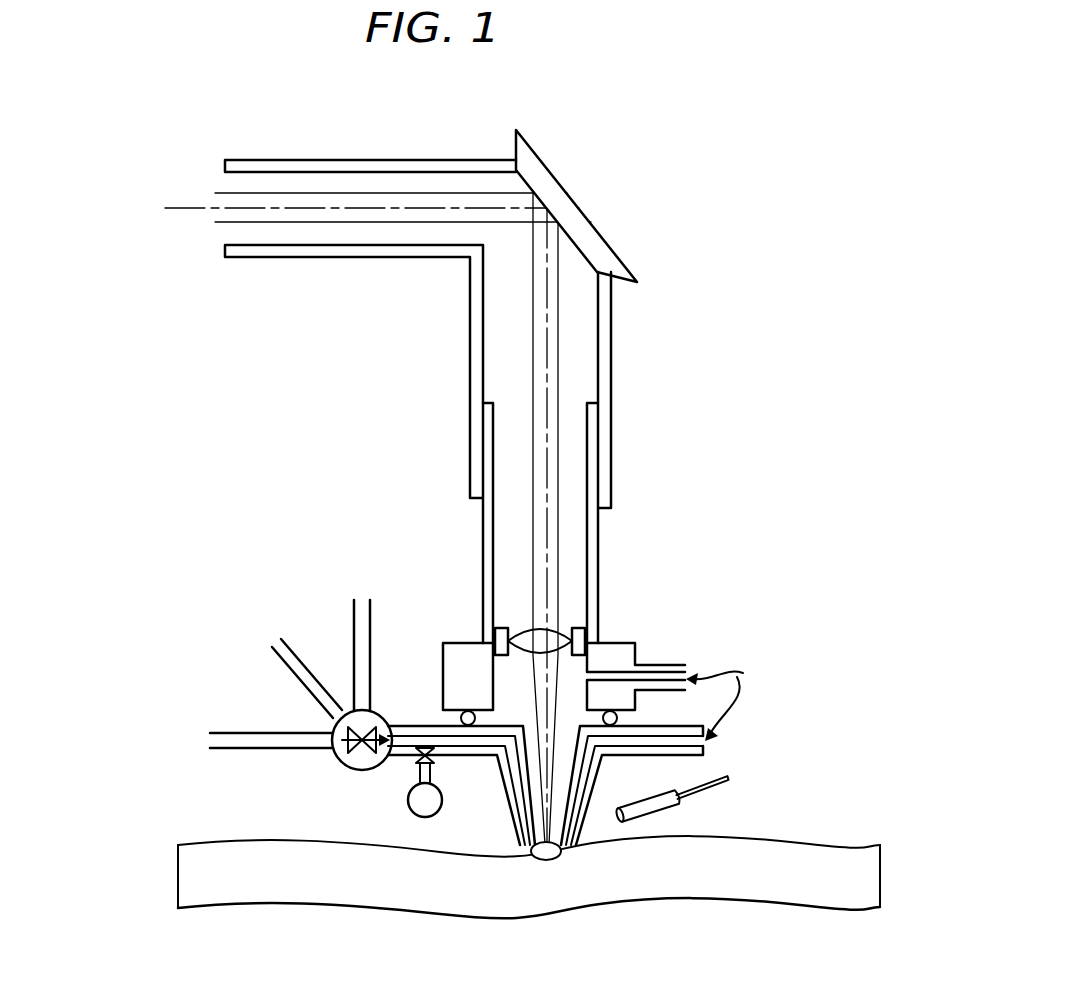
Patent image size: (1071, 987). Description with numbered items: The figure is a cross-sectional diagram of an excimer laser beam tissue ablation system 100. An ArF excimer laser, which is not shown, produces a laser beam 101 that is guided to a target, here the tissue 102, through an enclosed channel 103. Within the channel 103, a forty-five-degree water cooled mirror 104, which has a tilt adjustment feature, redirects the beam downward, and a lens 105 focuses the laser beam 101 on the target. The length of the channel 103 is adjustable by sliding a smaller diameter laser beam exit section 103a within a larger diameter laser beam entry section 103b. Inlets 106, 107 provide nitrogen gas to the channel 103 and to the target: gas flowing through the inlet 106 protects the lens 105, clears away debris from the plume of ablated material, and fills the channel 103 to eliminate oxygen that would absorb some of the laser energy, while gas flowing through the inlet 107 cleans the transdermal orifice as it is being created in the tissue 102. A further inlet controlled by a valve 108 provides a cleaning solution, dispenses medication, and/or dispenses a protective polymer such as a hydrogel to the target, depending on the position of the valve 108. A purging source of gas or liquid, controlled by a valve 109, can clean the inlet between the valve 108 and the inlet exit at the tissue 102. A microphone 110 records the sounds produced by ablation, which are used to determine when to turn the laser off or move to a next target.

The system 100 is at (157, 100).
The laser beam 101 is at (215, 218).
The tissue 102 is at (565, 906).
The channel 103 is at (454, 433).
The laser beam exit section 103a is at (482, 508).
The laser beam entry section 103b is at (470, 302).
The water cooled mirror 104 is at (640, 279).
The lens 105 is at (566, 632).
The inlet 106 is at (660, 665).
The inlet 107 is at (690, 758).
The valve 108 is at (338, 762).
The valve 109 is at (432, 752).
The microphone 110 is at (668, 808).